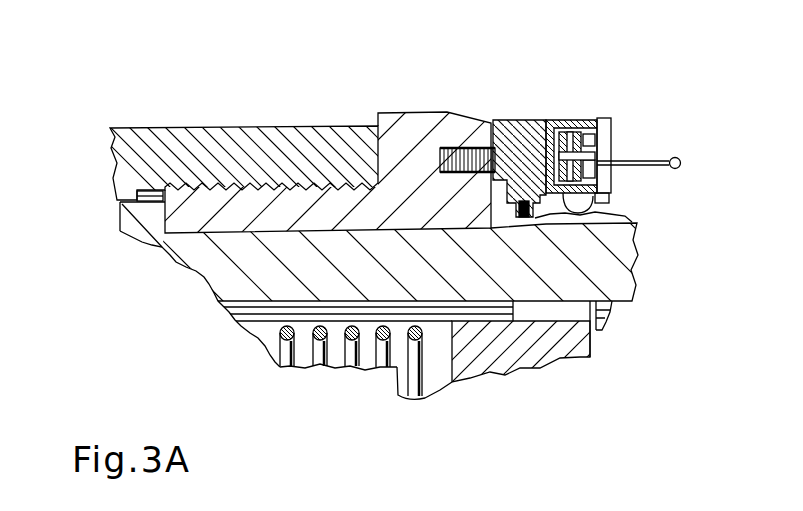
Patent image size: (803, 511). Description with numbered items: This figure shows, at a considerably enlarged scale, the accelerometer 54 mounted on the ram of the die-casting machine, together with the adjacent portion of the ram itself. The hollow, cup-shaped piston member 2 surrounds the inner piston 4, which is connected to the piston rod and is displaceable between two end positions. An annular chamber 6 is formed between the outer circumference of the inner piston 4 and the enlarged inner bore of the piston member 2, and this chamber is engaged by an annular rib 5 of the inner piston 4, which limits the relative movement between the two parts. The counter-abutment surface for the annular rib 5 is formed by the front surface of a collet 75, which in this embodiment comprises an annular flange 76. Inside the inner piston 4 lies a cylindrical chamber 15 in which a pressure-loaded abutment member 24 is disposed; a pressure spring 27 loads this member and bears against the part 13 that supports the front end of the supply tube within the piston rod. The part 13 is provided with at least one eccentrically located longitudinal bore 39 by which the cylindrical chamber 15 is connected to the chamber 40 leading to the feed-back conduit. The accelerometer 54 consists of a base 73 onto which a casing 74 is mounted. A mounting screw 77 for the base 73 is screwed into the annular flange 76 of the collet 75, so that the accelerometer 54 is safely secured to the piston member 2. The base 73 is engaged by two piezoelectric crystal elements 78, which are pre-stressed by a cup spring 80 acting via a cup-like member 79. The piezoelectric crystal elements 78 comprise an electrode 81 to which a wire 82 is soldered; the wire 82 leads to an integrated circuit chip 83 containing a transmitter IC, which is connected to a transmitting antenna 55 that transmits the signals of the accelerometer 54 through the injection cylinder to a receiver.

The piston member 2 is at (146, 106).
The inner piston 4 is at (212, 267).
The annular rib 5 is at (147, 214).
The annular chamber 6 is at (121, 203).
The part 13 is at (530, 355).
The cylindrical chamber 15 is at (268, 319).
The pressure-loaded abutment member 24 is at (360, 377).
The pressure spring 27 is at (410, 394).
The longitudinal bore 39 is at (585, 355).
The chamber 40 is at (606, 320).
The accelerometer 54 is at (576, 96).
The transmitting antenna 55 is at (655, 161).
The base 73 is at (515, 136).
The casing 74 is at (548, 130).
The collet 75 is at (258, 210).
The annular flange 76 is at (402, 125).
The mounting screw 77 is at (465, 152).
The piezoelectric crystal elements 78 is at (565, 168).
The cup-like member 79 is at (580, 128).
The cup spring 80 is at (611, 140).
The electrode 81 is at (587, 209).
The wire 82 is at (600, 205).
The integrated circuit chip 83 is at (607, 178).